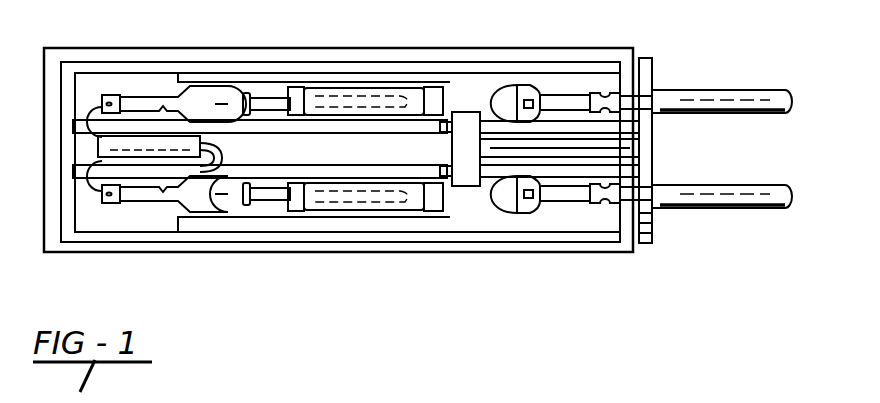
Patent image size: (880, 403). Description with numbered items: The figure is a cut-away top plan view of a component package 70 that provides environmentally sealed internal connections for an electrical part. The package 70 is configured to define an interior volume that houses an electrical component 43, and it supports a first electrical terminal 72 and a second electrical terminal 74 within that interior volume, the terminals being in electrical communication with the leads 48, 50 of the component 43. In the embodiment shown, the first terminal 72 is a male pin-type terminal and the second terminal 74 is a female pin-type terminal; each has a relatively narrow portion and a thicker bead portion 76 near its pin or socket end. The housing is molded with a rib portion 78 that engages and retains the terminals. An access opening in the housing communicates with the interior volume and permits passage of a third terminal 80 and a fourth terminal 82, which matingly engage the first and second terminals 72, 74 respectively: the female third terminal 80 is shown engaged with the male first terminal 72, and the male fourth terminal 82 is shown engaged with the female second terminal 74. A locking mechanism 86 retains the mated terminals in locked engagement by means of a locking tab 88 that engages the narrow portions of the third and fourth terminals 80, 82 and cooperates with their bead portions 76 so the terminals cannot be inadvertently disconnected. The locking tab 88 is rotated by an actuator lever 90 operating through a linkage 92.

The electrical component 43 is at (147, 140).
The lead 48 is at (86, 108).
The lead 50 is at (78, 198).
The component package 70 is at (378, 44).
The first electrical terminal 72 is at (278, 98).
The second electrical terminal 74 is at (278, 212).
The bead portion 76 is at (298, 88).
The rib portion 78 is at (246, 92).
The third terminal 80 is at (490, 92).
The fourth terminal 82 is at (462, 208).
The locking mechanism 86 is at (658, 70).
The locking tab 88 is at (480, 210).
The actuator lever 90 is at (647, 180).
The linkage 92 is at (641, 150).